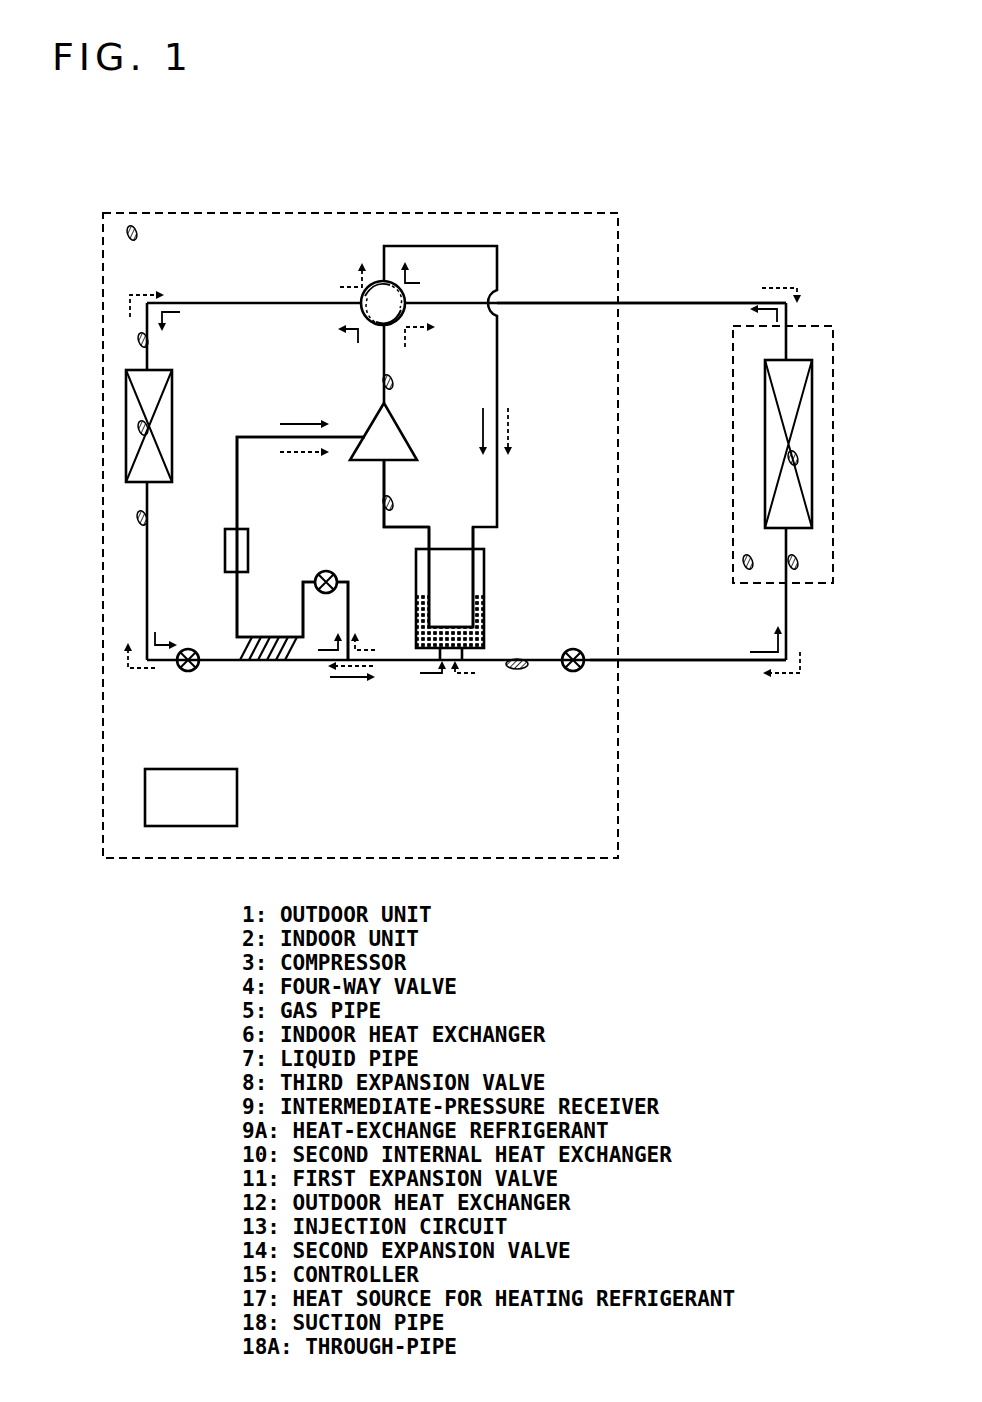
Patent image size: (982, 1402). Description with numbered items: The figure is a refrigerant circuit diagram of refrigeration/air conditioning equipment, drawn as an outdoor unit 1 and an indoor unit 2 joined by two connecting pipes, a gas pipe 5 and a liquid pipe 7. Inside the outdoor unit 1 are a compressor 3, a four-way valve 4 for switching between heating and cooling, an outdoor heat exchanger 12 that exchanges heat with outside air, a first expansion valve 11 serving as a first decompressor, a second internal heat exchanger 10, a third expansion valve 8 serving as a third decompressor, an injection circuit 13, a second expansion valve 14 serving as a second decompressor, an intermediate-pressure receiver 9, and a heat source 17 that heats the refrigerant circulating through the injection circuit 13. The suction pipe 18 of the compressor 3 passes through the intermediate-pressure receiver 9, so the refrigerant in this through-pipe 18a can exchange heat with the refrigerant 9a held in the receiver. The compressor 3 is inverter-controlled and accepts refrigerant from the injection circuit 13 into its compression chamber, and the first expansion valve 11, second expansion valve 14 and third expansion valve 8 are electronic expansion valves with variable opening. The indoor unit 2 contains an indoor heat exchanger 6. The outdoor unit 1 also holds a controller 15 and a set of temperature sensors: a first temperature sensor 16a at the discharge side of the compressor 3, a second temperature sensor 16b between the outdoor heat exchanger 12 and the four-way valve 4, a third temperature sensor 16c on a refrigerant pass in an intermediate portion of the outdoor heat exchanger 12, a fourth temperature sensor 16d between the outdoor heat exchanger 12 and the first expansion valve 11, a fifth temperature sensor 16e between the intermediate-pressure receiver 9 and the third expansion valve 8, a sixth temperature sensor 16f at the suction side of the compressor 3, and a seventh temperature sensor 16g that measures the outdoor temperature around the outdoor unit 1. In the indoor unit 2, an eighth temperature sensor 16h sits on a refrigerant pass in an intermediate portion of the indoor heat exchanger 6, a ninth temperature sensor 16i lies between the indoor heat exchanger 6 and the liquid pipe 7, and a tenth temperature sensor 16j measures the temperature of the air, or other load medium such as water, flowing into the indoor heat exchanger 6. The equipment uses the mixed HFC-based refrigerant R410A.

The outdoor unit 1 is at (618, 815).
The indoor unit 2 is at (833, 326).
The compressor 3 is at (400, 425).
The four-way valve 4 is at (404, 285).
The gas pipe 5 is at (665, 300).
The indoor heat exchanger 6 is at (812, 425).
The liquid pipe 7 is at (660, 662).
The third expansion valve 8 is at (572, 672).
The intermediate-pressure receiver 9 is at (485, 598).
The refrigerant 9a is at (416, 632).
The second internal heat exchanger 10 is at (270, 660).
The first expansion valve 11 is at (183, 670).
The outdoor heat exchanger 12 is at (126, 393).
The injection circuit 13 is at (268, 438).
The second expansion valve 14 is at (333, 571).
The controller 15 is at (145, 795).
The first temperature sensor 16a is at (395, 380).
The second temperature sensor 16b is at (136, 342).
The third temperature sensor 16c is at (136, 433).
The fourth temperature sensor 16d is at (135, 522).
The fifth temperature sensor 16e is at (520, 672).
The sixth temperature sensor 16f is at (395, 500).
The seventh temperature sensor 16g is at (125, 238).
The eighth temperature sensor 16h is at (800, 456).
The ninth temperature sensor 16i is at (800, 560).
The tenth temperature sensor 16j is at (740, 565).
The heat source 17 is at (225, 545).
The suction pipe 18 is at (390, 528).
The through-pipe 18a is at (484, 565).